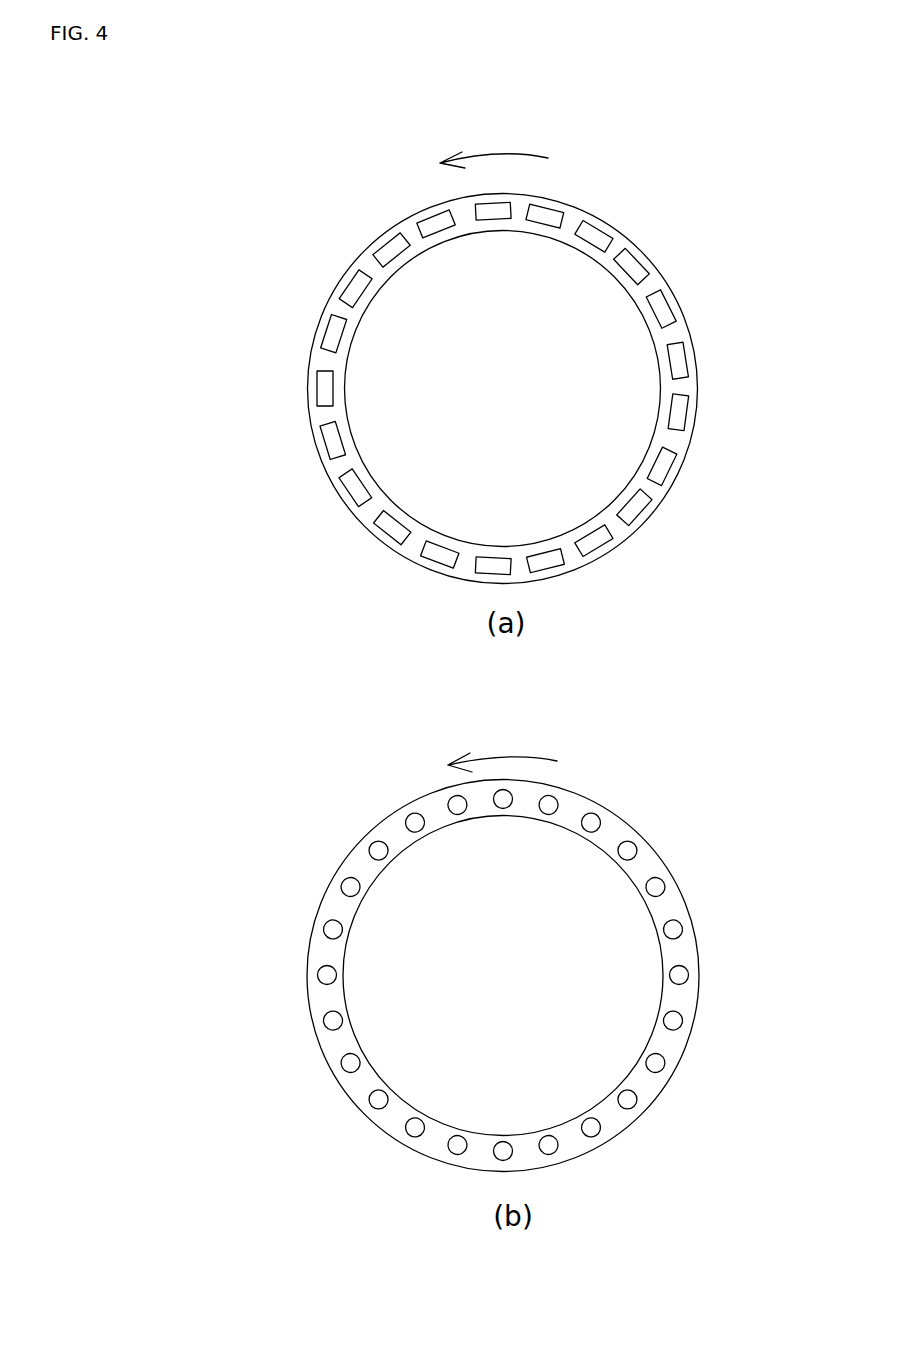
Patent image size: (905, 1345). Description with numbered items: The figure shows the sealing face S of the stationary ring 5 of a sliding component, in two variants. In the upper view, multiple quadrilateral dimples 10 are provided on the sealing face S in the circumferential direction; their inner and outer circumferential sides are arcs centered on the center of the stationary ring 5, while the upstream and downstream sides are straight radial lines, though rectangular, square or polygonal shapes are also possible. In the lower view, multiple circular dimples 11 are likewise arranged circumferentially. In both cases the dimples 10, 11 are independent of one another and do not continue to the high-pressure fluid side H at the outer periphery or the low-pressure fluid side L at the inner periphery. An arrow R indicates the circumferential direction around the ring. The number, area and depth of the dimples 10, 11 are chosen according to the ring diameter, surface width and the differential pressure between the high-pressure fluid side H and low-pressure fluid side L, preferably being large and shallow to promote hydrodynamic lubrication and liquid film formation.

The stationary ring 5 is at (588, 193).
The quadrilateral dimples 10 is at (385, 255).
The circular dimples 11 is at (327, 975).
The sealing face S is at (621, 247).
The rotation direction R is at (498, 443).
The high-pressure fluid side H is at (190, 222).
The low-pressure fluid side L is at (487, 406).